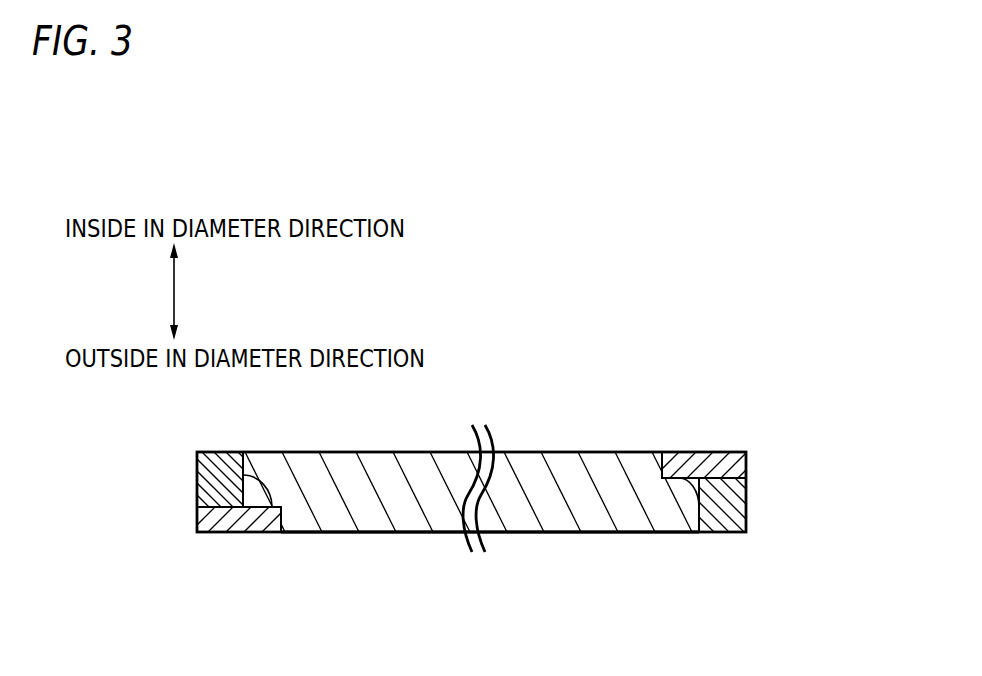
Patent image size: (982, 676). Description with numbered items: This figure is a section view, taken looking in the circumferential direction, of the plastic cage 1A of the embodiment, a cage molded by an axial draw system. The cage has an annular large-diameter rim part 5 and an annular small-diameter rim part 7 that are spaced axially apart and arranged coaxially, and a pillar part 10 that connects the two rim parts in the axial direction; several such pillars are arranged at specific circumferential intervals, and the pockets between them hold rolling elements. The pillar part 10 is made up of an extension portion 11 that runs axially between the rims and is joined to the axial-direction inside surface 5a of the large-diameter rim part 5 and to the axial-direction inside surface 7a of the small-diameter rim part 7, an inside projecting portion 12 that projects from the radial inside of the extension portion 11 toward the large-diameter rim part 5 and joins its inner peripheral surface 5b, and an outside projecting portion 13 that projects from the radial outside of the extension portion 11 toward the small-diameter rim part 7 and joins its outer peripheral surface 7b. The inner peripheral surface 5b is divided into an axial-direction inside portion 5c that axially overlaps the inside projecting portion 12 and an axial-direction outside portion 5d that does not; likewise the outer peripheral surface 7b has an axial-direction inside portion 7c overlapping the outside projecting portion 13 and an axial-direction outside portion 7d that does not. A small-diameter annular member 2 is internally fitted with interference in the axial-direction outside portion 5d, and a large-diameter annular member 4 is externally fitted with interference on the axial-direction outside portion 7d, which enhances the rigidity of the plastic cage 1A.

The plastic cage 1A is at (665, 292).
The small-diameter annular member 2 is at (231, 458).
The large-diameter annular member 4 is at (727, 527).
The large-diameter rim part 5 is at (246, 524).
The axial-direction inside surface 5a is at (281, 514).
The inner peripheral surface 5b is at (140, 420).
The axial-direction inside portion 5c is at (243, 475).
The axial-direction outside portion 5d is at (216, 505).
The small-diameter rim part 7 is at (708, 460).
The axial-direction inside surface 7a is at (662, 465).
The outer peripheral surface 7b is at (807, 482).
The axial-direction inside portion 7c is at (700, 480).
The axial-direction outside portion 7d is at (727, 478).
The pillar part 10 is at (512, 536).
The extension portion 11 is at (435, 468).
The inside projecting portion 12 is at (263, 467).
The outside projecting portion 13 is at (687, 506).